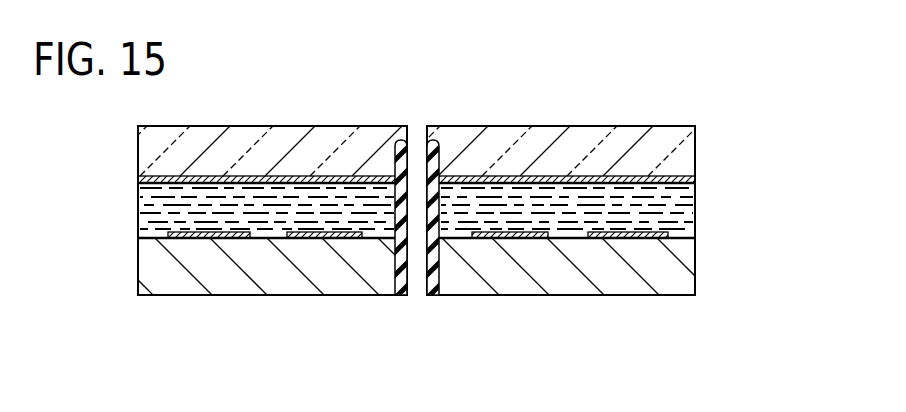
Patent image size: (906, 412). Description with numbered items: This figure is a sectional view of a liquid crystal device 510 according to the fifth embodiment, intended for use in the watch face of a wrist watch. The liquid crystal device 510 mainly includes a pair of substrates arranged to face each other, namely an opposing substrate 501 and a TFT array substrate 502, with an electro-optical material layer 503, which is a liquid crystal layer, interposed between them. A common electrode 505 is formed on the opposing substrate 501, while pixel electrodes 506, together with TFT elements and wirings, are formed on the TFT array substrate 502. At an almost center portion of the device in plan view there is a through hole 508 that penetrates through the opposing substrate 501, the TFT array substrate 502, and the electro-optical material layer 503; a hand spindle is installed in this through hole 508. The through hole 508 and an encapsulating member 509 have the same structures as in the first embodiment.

The opposing substrate 501 is at (677, 148).
The TFT array substrate 502 is at (677, 265).
The electro-optical material layer 503 is at (677, 205).
The common electrode 505 is at (138, 177).
The pixel electrodes 506 is at (178, 232).
The through hole 508 is at (424, 106).
The encapsulating member 509 is at (401, 294).
The liquid crystal device 510 is at (683, 90).